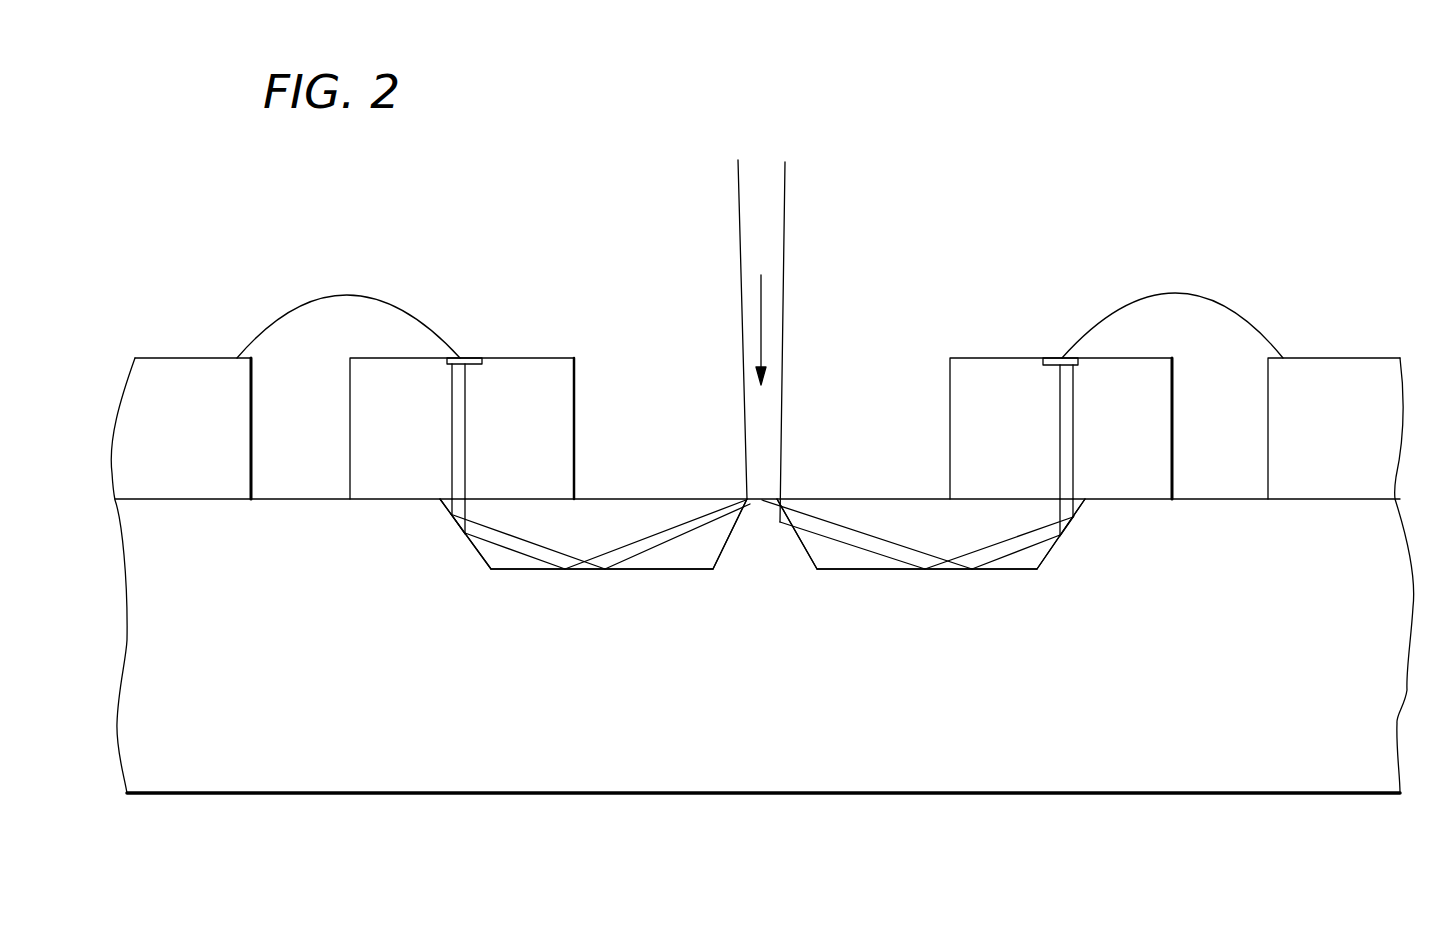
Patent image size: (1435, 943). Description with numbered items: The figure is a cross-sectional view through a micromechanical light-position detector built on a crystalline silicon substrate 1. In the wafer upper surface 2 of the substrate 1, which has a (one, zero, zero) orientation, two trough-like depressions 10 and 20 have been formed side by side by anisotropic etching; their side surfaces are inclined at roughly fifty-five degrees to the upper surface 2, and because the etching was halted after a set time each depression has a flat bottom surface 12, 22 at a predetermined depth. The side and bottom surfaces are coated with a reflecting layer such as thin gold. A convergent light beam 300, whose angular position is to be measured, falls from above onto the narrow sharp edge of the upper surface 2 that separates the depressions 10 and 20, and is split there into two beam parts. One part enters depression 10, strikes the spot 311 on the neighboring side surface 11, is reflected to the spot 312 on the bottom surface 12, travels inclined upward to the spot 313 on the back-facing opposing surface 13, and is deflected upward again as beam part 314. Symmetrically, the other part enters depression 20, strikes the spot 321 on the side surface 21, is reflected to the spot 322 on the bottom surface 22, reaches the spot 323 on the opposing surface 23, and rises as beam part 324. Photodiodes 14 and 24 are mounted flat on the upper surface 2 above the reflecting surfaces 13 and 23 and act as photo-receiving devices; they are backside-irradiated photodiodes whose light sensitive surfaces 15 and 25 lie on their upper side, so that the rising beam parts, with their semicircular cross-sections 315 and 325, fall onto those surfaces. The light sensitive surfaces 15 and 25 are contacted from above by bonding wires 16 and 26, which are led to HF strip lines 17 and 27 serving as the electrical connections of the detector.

The silicon substrate 1 is at (1355, 702).
The upper surface 2 is at (1226, 498).
The depression 10 is at (633, 510).
The side surface 11 is at (725, 547).
The bottom surface 12 is at (678, 570).
The opposing surface 13 is at (483, 567).
The photodiode 14 is at (422, 443).
The light sensitive surface 15 is at (462, 358).
The bonding wire 16 is at (277, 312).
The HF strip line 17 is at (192, 443).
The depression 20 is at (880, 505).
The side surface 21 is at (800, 545).
The bottom surface 22 is at (862, 570).
The opposing surface 23 is at (1047, 557).
The photodiode 24 is at (1138, 445).
The light sensitive surface 25 is at (1052, 358).
The bonding wire 26 is at (1257, 325).
The HF strip line 27 is at (1352, 448).
The light beam 300 is at (768, 236).
The spot 311 is at (745, 500).
The spot 312 is at (585, 570).
The spot 313 is at (462, 527).
The beam part 314 is at (468, 500).
The semicircular cross-section 315 is at (458, 366).
The spot 321 is at (780, 497).
The spot 322 is at (953, 570).
The spot 323 is at (1074, 528).
The beam part 324 is at (1058, 498).
The semicircular cross-section 325 is at (1059, 366).